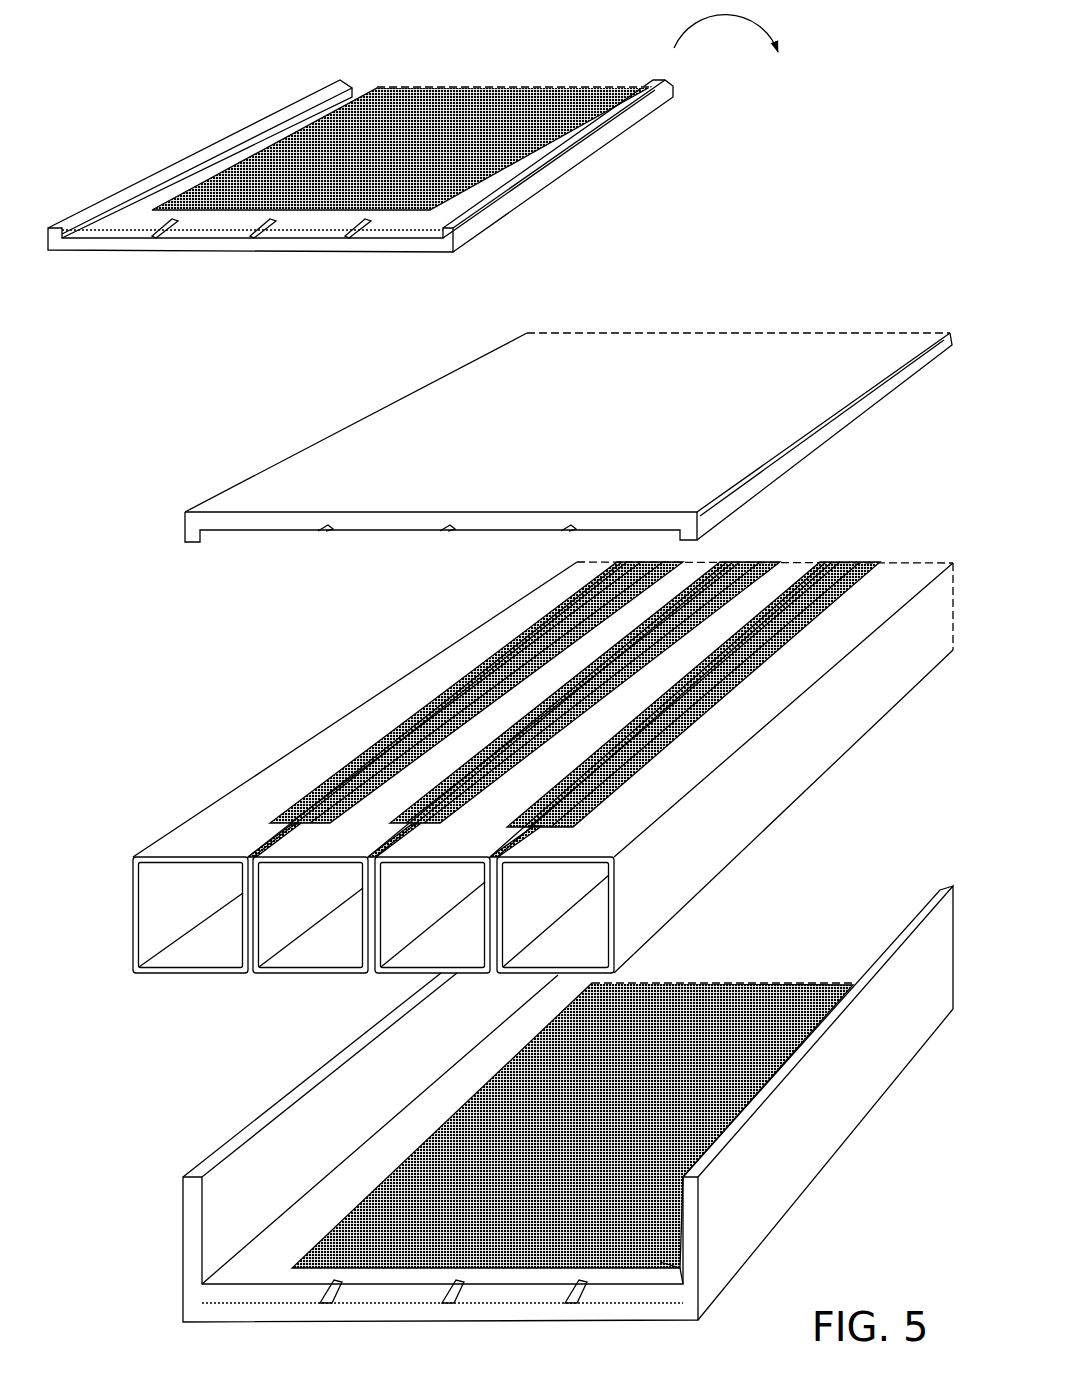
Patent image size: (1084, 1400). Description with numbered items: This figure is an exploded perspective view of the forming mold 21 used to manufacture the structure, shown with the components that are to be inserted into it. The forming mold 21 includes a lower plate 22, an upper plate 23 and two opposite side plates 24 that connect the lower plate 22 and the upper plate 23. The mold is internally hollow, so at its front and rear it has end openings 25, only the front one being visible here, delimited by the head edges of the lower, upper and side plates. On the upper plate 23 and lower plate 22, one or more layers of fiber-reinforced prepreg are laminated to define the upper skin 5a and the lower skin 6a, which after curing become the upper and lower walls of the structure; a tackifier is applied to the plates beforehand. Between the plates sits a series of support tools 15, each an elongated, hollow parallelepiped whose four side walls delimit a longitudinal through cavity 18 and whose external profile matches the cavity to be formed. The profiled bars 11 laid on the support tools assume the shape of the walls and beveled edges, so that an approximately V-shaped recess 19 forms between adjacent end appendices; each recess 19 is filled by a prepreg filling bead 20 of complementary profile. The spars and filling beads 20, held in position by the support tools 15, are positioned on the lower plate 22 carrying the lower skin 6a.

The upper skin 5a is at (430, 118).
The forming mold 21 is at (500, 273).
The upper plate 23 is at (500, 273).
The filling bead 20 is at (775, 560).
The profiled bar 11 is at (690, 592).
The recess 19 is at (252, 848).
The support tool 15 is at (526, 762).
The longitudinal through cavity 18 is at (228, 938).
The side plate 24 is at (180, 1230).
The lower plate 22 is at (526, 1129).
The lower skin 6a is at (520, 1228).
The end opening 25 is at (662, 1266).